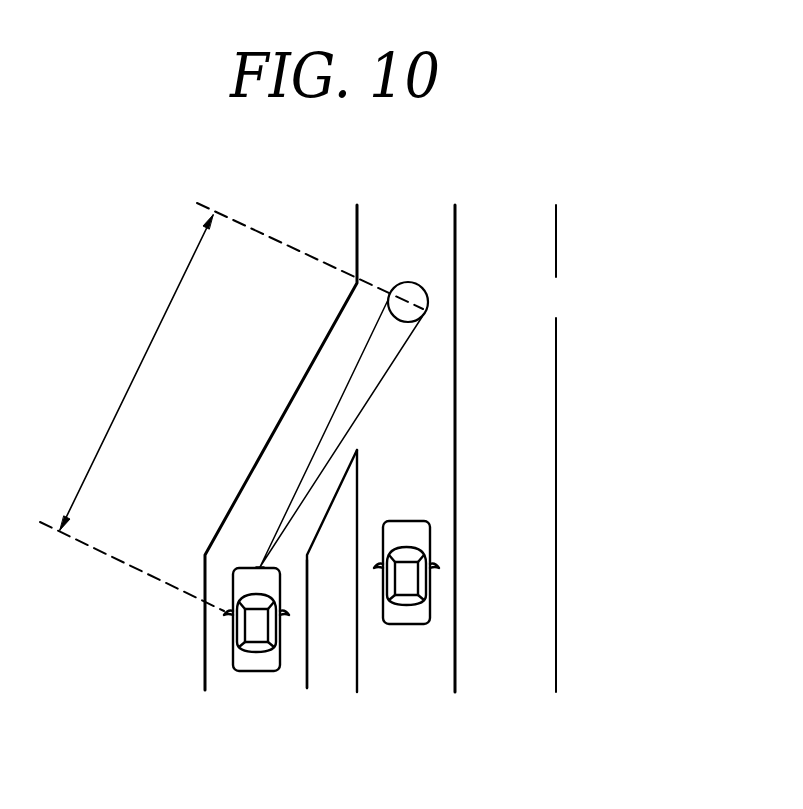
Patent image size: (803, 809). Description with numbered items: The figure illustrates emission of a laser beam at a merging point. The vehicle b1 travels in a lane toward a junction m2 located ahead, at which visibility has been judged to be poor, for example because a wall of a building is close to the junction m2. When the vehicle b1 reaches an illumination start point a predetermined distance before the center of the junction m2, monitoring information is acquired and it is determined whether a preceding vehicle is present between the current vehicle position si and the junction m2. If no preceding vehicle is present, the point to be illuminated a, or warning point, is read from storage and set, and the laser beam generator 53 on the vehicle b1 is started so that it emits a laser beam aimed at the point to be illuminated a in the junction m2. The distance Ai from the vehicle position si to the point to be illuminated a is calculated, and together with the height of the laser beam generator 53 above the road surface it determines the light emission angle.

The laser beam generator 53 is at (259, 567).
The distance Ai is at (136, 372).
The point to be illuminated a is at (429, 311).
The junction m2 is at (381, 383).
The position of the user's vehicle si is at (255, 623).
The vehicle b1 is at (287, 680).